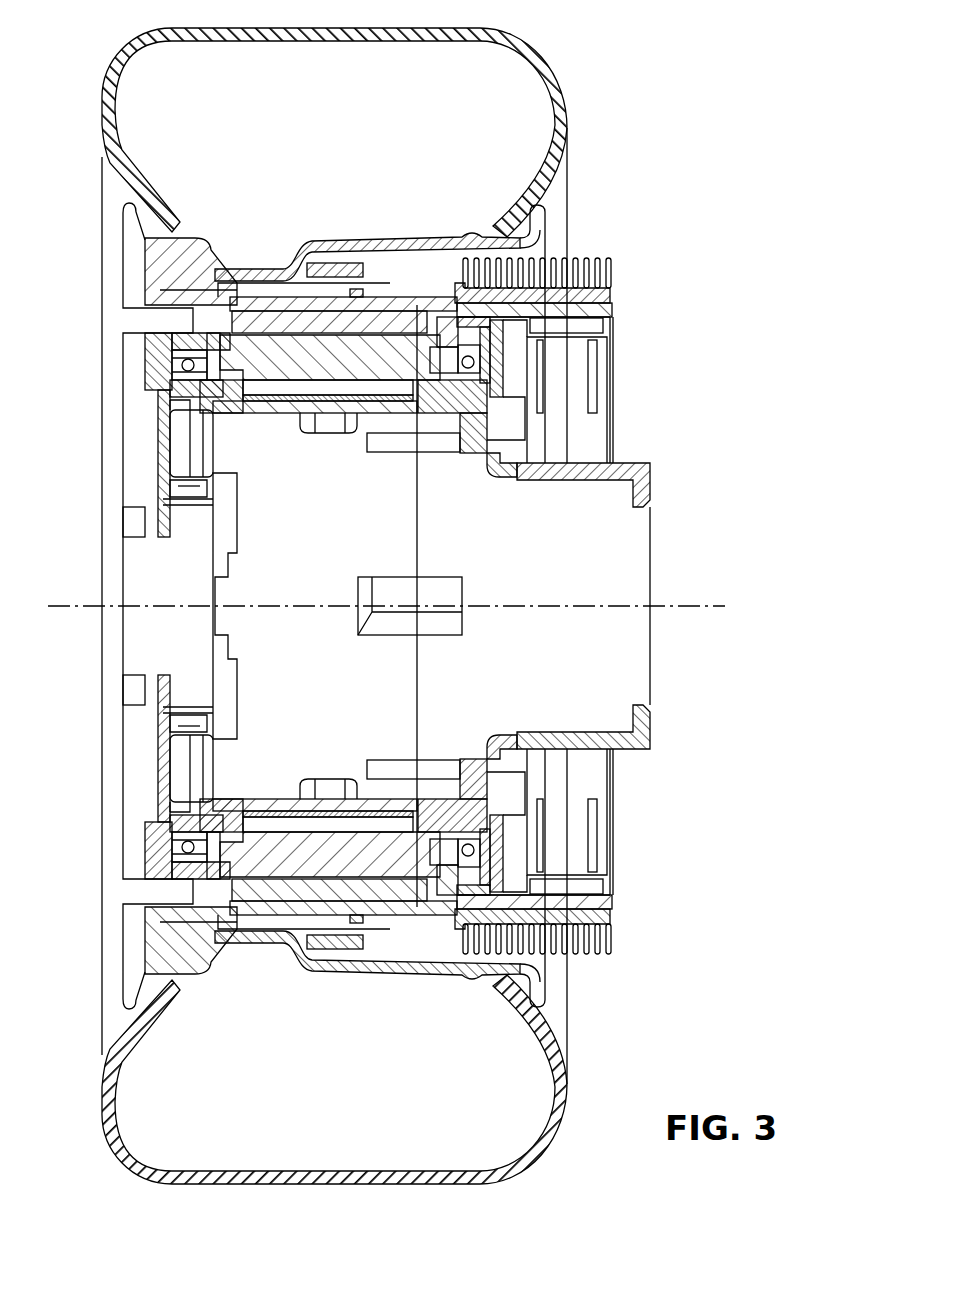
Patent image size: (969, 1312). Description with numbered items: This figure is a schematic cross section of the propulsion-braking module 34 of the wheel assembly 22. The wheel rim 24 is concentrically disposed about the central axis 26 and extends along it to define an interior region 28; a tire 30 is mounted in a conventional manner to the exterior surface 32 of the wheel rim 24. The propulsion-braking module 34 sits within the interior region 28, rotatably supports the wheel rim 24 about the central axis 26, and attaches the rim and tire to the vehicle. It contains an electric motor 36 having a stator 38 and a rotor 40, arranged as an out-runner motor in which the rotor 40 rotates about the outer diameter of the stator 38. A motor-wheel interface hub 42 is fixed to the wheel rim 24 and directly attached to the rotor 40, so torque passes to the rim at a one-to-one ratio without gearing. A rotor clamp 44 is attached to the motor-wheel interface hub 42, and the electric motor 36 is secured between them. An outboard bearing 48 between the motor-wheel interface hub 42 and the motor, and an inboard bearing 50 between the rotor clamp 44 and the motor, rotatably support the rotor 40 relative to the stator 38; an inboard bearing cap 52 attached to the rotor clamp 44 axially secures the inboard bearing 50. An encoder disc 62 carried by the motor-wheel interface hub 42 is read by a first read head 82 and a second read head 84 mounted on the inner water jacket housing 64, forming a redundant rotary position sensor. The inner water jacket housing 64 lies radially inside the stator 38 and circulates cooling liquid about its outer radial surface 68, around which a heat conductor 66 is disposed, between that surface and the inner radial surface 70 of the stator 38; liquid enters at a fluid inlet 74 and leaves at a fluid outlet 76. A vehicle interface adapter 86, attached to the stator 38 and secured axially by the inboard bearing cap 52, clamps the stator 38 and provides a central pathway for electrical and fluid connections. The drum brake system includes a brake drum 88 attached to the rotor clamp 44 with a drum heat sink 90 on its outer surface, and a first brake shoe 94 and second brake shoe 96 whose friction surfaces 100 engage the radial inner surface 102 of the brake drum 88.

The wheel assembly 22 is at (606, 50).
The wheel rim 24 is at (140, 283).
The central axis 26 is at (62, 603).
The interior region 28 is at (299, 543).
The tire 30 is at (520, 37).
The exterior surface 32 is at (330, 240).
The propulsion-braking module 34 is at (146, 431).
The electric motor 36 is at (206, 343).
The stator 38 is at (278, 380).
The rotor 40 is at (262, 300).
The motor-wheel interface hub 42 is at (217, 293).
The rotor clamp 44 is at (440, 300).
The outboard bearing 48 is at (177, 840).
The inboard bearing 50 is at (510, 863).
The inboard bearing cap 52 is at (495, 832).
The encoder disc 62 is at (197, 752).
The inner water jacket housing 64 is at (228, 810).
The heat conductor 66 is at (280, 820).
The outer radial surface 68 is at (378, 822).
The inner radial surface 70 is at (310, 820).
The fluid inlet 74 is at (338, 792).
The fluid outlet 76 is at (336, 420).
The first read head 82 is at (180, 450).
The second read head 84 is at (178, 770).
The vehicle interface adapter 86 is at (650, 493).
The brake drum 88 is at (612, 310).
The drum heat sink 90 is at (587, 272).
The first brake shoe 94 is at (577, 375).
The second brake shoe 96 is at (578, 785).
The friction surface 100 is at (612, 325).
The radial inner surface 102 is at (563, 953).